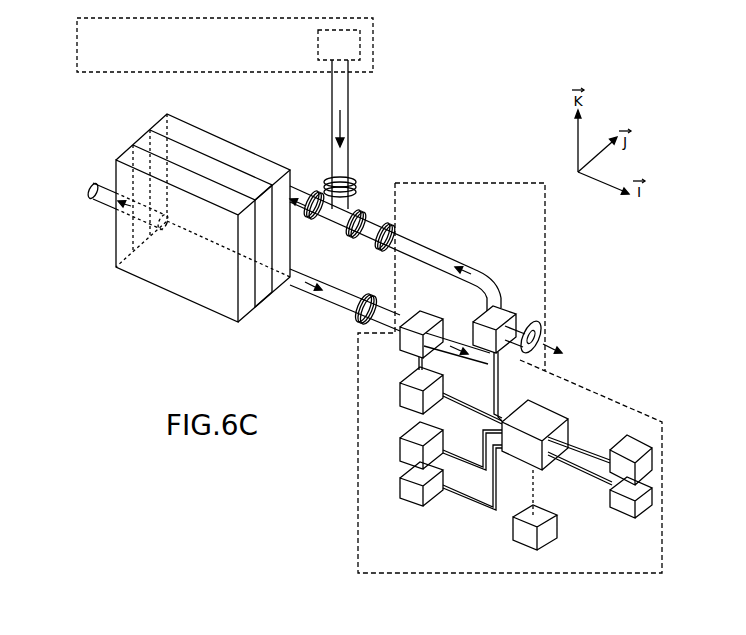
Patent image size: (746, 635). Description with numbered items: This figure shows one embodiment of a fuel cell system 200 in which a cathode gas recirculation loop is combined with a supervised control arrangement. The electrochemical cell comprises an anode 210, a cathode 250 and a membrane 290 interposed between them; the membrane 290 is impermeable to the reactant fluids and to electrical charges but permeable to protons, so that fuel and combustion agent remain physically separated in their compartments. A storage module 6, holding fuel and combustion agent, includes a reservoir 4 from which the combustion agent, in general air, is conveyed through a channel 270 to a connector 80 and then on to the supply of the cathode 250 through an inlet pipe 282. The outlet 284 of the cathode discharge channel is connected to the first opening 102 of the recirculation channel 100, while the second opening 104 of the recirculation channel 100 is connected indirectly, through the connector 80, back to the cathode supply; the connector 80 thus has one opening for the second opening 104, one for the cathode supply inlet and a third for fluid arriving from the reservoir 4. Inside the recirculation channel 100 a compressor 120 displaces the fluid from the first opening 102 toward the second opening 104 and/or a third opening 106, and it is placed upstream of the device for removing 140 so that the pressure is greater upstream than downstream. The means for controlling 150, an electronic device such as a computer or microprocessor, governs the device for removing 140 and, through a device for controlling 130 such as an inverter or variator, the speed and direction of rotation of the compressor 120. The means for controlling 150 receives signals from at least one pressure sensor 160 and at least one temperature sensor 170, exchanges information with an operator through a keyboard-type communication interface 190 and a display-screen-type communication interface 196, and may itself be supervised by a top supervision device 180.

The reservoir 4 is at (339, 45).
The storage module 6 is at (76, 33).
The connector 80 is at (322, 220).
The recirculation channel 100 is at (547, 209).
The first opening 102 is at (370, 338).
The second opening 104 is at (394, 228).
The third opening 106 is at (573, 357).
The compressor 120 is at (427, 307).
The device for controlling 130 is at (403, 393).
The device for removing 140 is at (468, 326).
The means for controlling 150 is at (522, 416).
The pressure sensor 160 is at (622, 450).
The temperature sensor 170 is at (622, 504).
The top supervision device 180 is at (520, 532).
The communication interface 190 is at (411, 487).
The communication interface 196 is at (411, 448).
The fluid circulation system 200 is at (159, 348).
The anode 210 is at (163, 283).
The cathode 250 is at (190, 124).
The supply pipe 270 is at (338, 96).
The inlet pipe 282 is at (278, 178).
The outlet 284 is at (308, 268).
The membrane 290 is at (268, 297).